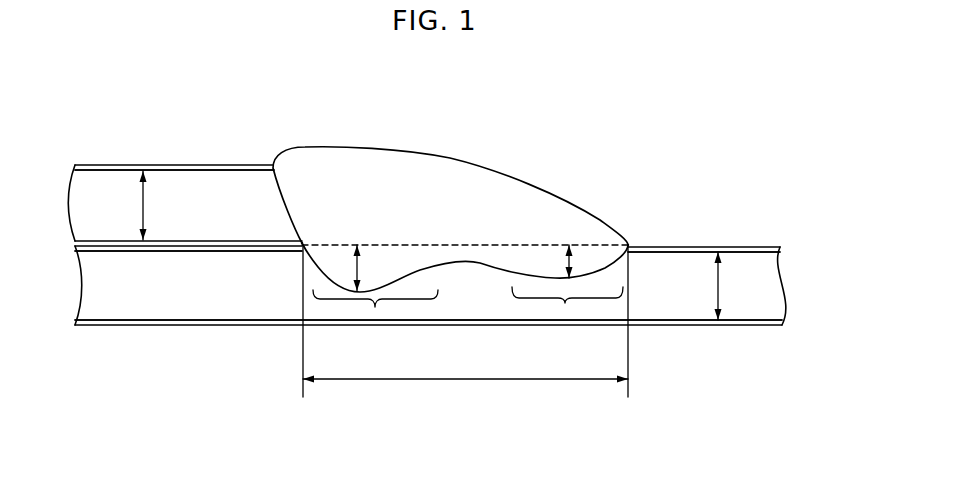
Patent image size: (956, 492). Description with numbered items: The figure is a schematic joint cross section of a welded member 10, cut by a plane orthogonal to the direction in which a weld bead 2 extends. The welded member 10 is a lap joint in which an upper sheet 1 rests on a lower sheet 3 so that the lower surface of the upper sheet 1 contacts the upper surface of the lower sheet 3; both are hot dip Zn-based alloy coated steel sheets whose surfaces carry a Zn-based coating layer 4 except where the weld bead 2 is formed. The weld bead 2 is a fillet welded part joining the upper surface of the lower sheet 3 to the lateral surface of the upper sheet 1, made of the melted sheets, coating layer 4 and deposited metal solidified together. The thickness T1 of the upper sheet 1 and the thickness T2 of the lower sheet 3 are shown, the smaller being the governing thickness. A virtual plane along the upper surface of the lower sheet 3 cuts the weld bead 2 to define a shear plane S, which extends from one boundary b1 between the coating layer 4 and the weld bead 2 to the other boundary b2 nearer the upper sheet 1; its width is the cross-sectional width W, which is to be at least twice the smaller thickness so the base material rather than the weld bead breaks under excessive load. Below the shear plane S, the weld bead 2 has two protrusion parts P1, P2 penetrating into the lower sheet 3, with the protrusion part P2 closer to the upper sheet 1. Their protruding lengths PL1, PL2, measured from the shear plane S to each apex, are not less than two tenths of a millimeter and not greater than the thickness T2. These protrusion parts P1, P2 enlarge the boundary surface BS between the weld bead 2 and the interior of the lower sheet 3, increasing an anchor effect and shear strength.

The welded member 10 is at (758, 110).
The upper sheet 1 is at (102, 180).
The weld bead 2 is at (505, 178).
The lower sheet 3 is at (662, 310).
The Zn-based coating layer 4 is at (210, 241).
The shear plane S is at (452, 244).
The boundary b1 is at (629, 245).
The boundary b2 is at (302, 243).
The boundary surface BS is at (487, 262).
The protruding length PL1 is at (568, 258).
The protruding length PL2 is at (366, 255).
The protrusion part P1 is at (565, 303).
The protrusion part P2 is at (375, 307).
The cross-sectional width W is at (465, 326).
The thickness of the upper sheet T1 is at (157, 205).
The thickness of the lower sheet T2 is at (733, 286).